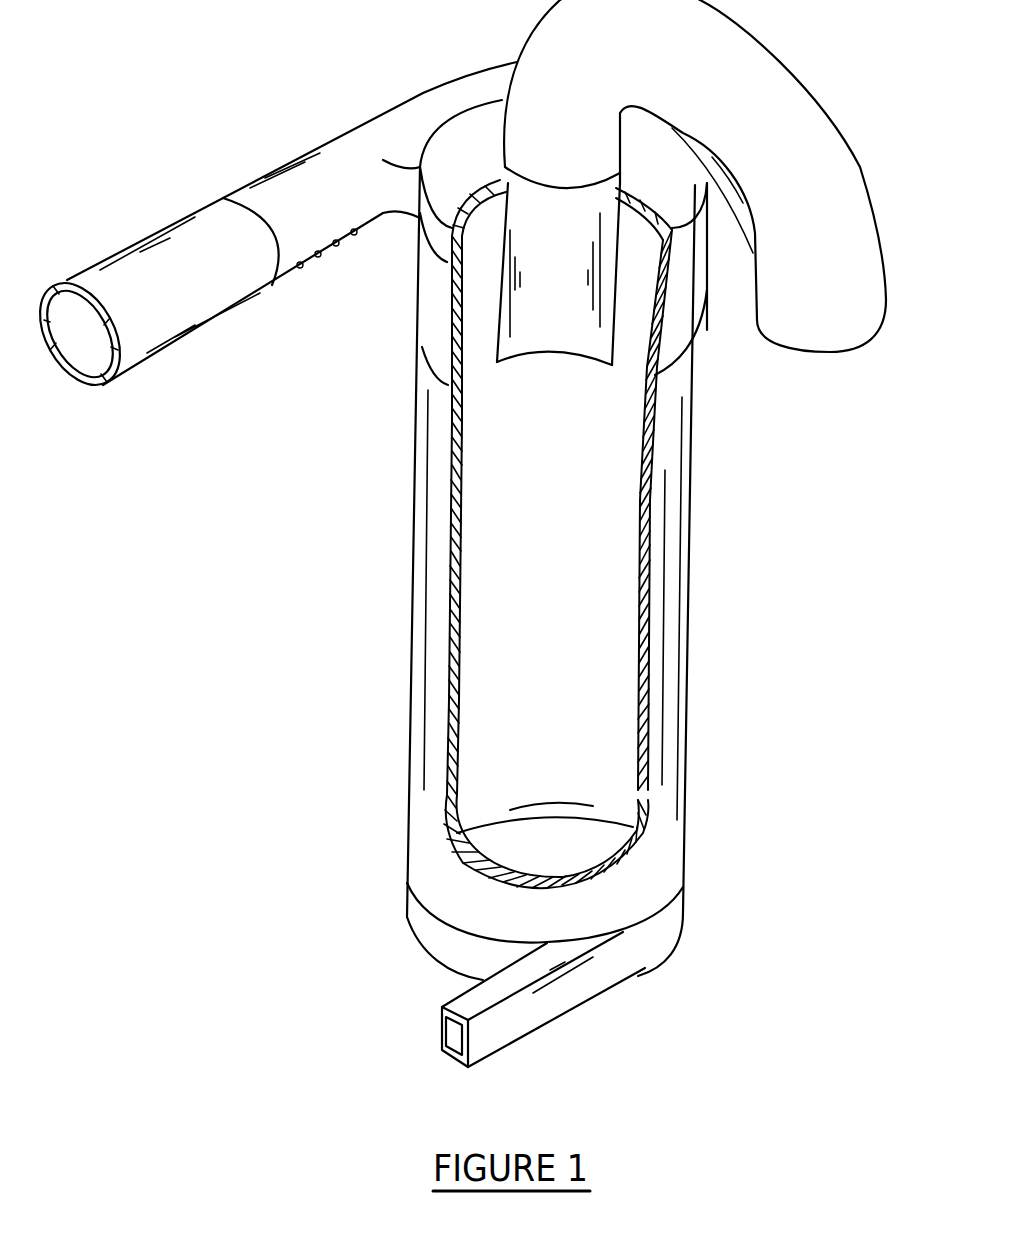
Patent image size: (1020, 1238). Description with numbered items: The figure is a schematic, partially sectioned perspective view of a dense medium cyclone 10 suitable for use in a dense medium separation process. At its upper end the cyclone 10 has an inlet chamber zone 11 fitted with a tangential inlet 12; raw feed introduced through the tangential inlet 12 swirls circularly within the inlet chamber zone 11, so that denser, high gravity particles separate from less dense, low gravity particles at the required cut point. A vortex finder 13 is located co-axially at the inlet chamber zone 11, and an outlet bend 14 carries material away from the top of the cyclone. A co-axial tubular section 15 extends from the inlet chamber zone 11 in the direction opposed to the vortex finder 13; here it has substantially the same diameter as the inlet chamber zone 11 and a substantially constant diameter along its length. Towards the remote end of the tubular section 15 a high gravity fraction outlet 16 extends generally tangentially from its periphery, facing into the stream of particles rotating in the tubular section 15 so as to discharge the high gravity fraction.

The cyclone 10 is at (818, 588).
The inlet chamber zone 11 is at (638, 290).
The tangential inlet 12 is at (287, 197).
The vortex finder 13 is at (605, 366).
The bent outlet tube 14 is at (853, 217).
The tubular section 15 is at (410, 568).
The high gravity fraction outlet 16 is at (528, 1008).